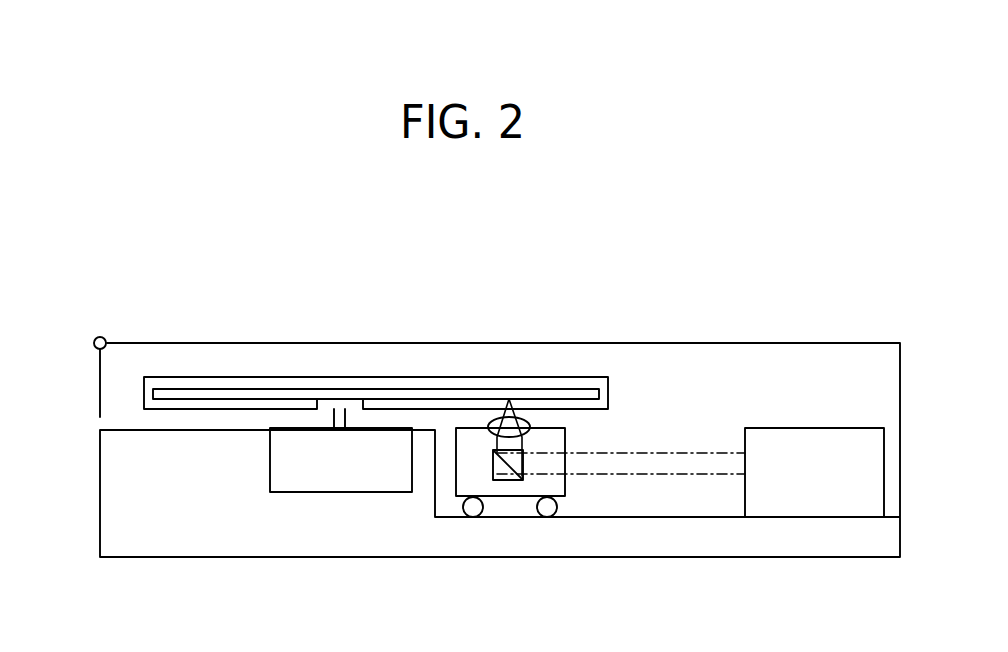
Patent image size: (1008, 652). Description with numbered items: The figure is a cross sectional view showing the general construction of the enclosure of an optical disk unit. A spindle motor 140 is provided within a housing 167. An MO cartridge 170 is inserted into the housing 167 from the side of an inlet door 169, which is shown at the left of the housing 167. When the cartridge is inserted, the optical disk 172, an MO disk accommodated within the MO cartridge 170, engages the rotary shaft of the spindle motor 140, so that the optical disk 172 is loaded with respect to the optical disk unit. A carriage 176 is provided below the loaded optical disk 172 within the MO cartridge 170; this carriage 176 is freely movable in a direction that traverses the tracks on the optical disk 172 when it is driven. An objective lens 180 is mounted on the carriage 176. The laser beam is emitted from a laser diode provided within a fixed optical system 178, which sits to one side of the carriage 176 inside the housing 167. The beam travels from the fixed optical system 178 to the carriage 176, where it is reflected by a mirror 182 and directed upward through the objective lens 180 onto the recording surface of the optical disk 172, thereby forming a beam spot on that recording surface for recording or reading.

The spindle motor 140 is at (338, 492).
The housing 167 is at (797, 343).
The inlet door 169 is at (100, 385).
The MO cartridge 170 is at (243, 377).
The optical disk 172 is at (532, 389).
The carriage 176 is at (513, 518).
The fixed optical system 178 is at (808, 428).
The objective lens 180 is at (530, 428).
The mirror 182 is at (492, 463).